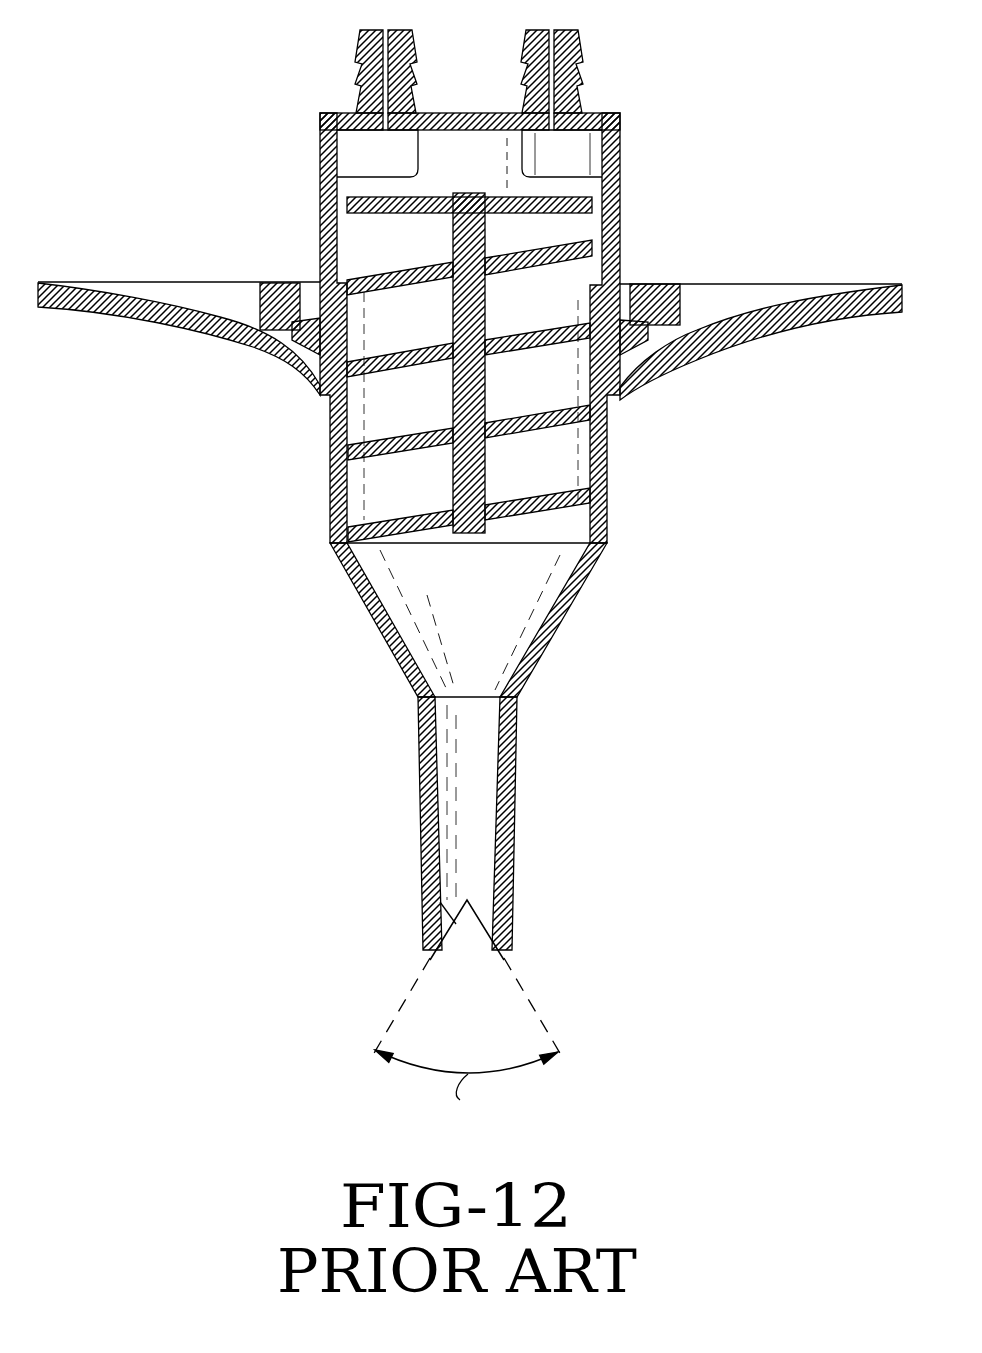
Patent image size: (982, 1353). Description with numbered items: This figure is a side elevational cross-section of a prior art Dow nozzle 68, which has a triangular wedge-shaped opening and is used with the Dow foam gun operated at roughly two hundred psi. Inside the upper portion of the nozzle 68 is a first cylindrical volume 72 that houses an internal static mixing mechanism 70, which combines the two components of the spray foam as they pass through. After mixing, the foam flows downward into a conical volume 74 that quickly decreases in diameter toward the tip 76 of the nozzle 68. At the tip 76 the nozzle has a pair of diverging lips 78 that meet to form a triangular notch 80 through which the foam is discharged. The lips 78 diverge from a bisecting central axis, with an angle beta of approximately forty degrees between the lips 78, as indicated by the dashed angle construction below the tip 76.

The Dow nozzle with triangular wedge-shaped opening 68 is at (225, 606).
The internal static mixing mechanism 70 is at (350, 202).
The first cylindrical volume 72 is at (333, 458).
The conical volume 74 is at (485, 605).
The tip 76 is at (470, 772).
The diverging lips 78 is at (437, 902).
The triangular notch 80 is at (473, 930).